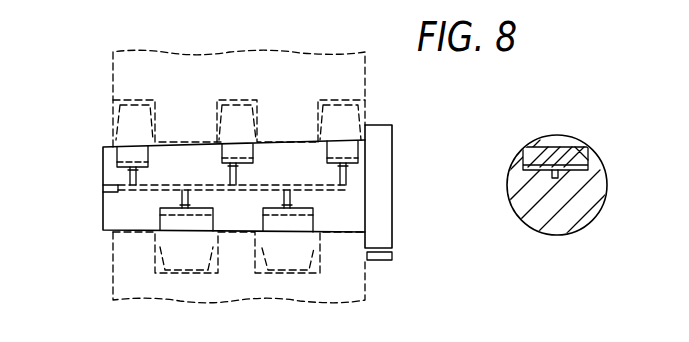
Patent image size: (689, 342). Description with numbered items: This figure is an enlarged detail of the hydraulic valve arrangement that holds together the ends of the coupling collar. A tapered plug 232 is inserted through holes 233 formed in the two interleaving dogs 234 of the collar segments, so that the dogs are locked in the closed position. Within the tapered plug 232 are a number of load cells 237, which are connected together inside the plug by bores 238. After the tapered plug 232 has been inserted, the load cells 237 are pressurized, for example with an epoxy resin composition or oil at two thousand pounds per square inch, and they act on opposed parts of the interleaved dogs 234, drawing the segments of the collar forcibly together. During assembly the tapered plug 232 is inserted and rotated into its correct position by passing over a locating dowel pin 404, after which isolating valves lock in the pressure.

The tapered plug 232 is at (348, 178).
The holes 233 is at (128, 163).
The interleaving dogs 234 is at (252, 118).
The load cells 237 is at (93, 240).
The bores 238 is at (327, 189).
The locating dowel pin 404 is at (365, 248).